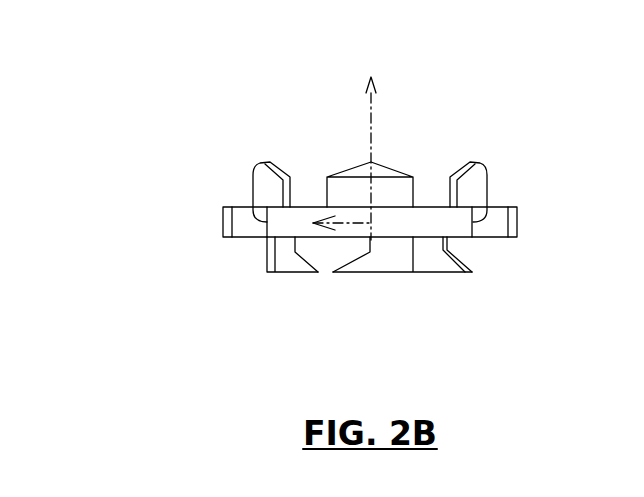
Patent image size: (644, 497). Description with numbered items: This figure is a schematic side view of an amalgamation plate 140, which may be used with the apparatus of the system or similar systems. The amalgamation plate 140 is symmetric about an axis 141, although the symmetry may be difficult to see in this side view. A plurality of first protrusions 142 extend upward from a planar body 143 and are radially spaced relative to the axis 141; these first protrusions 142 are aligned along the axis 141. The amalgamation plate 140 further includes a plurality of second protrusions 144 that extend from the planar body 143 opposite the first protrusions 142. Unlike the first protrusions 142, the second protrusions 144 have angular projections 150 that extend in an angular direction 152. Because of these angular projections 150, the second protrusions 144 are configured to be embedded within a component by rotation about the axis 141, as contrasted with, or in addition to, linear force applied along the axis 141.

The amalgamation plate 140 is at (203, 78).
The axis 141 is at (367, 118).
The first protrusions 142 is at (267, 183).
The planar body 143 is at (223, 220).
The second protrusions 144 is at (273, 252).
The angular projections 150 is at (303, 272).
The angular direction 152 is at (347, 222).